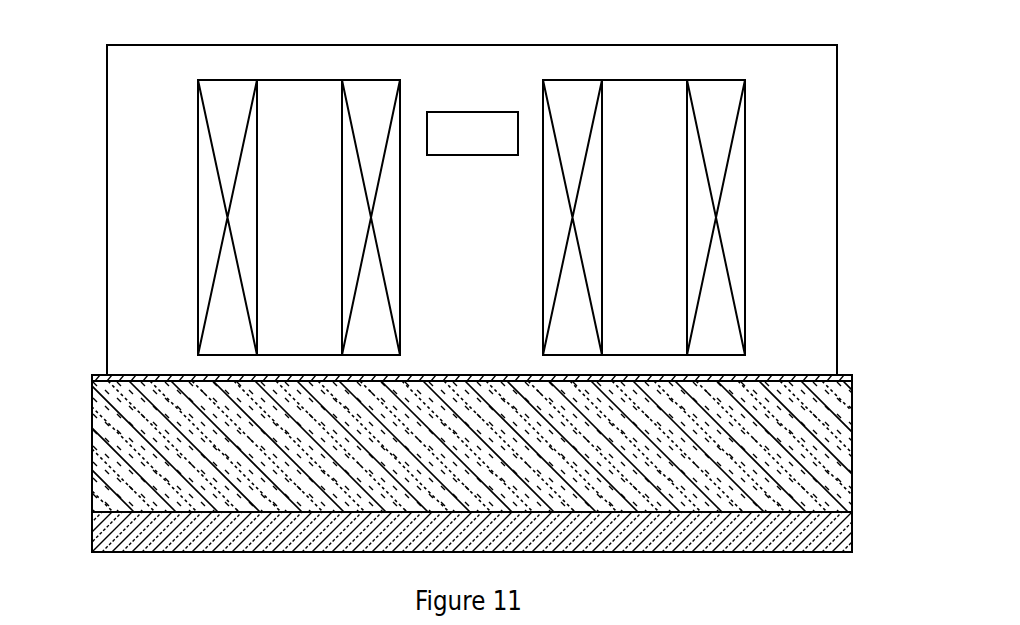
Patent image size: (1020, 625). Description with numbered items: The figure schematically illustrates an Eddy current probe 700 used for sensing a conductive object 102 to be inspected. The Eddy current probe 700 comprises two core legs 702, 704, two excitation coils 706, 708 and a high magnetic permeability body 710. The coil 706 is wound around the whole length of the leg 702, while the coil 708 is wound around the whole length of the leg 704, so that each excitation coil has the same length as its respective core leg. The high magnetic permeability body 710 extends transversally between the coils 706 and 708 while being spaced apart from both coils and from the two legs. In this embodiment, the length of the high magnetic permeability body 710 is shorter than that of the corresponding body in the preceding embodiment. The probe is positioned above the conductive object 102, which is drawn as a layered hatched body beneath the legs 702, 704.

The Eddy current probe 700 is at (100, 79).
The leg 702 is at (299, 217).
The leg 704 is at (644, 217).
The coil 706 is at (198, 217).
The coil 708 is at (543, 215).
The high magnetic permeability body 710 is at (458, 112).
The conductive object 102 is at (852, 530).